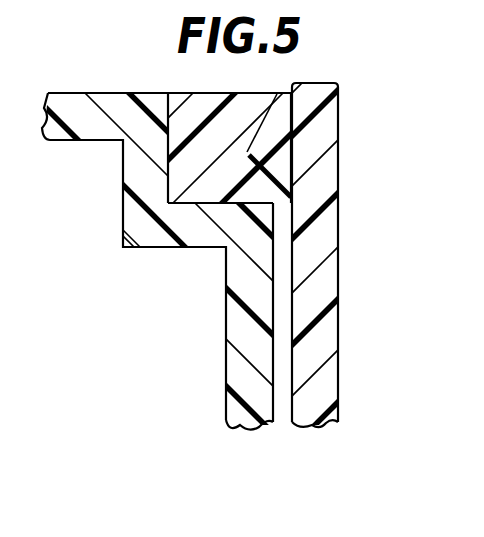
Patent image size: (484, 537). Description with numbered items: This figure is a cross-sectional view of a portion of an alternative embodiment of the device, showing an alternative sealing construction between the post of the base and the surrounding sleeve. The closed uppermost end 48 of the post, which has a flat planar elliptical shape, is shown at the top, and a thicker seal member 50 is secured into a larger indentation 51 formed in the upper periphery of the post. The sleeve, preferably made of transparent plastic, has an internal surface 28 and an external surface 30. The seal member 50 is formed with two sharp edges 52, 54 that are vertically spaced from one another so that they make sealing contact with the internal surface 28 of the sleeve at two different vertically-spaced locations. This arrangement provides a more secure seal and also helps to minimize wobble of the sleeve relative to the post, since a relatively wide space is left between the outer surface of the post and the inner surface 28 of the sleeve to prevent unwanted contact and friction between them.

The internal surface 28 is at (292, 403).
The external surface 30 is at (332, 257).
The uppermost end 48 is at (128, 94).
The seal member 50 is at (233, 93).
The indentation 51 is at (145, 243).
The sharp edge 52 is at (278, 123).
The sharp edge 54 is at (276, 190).